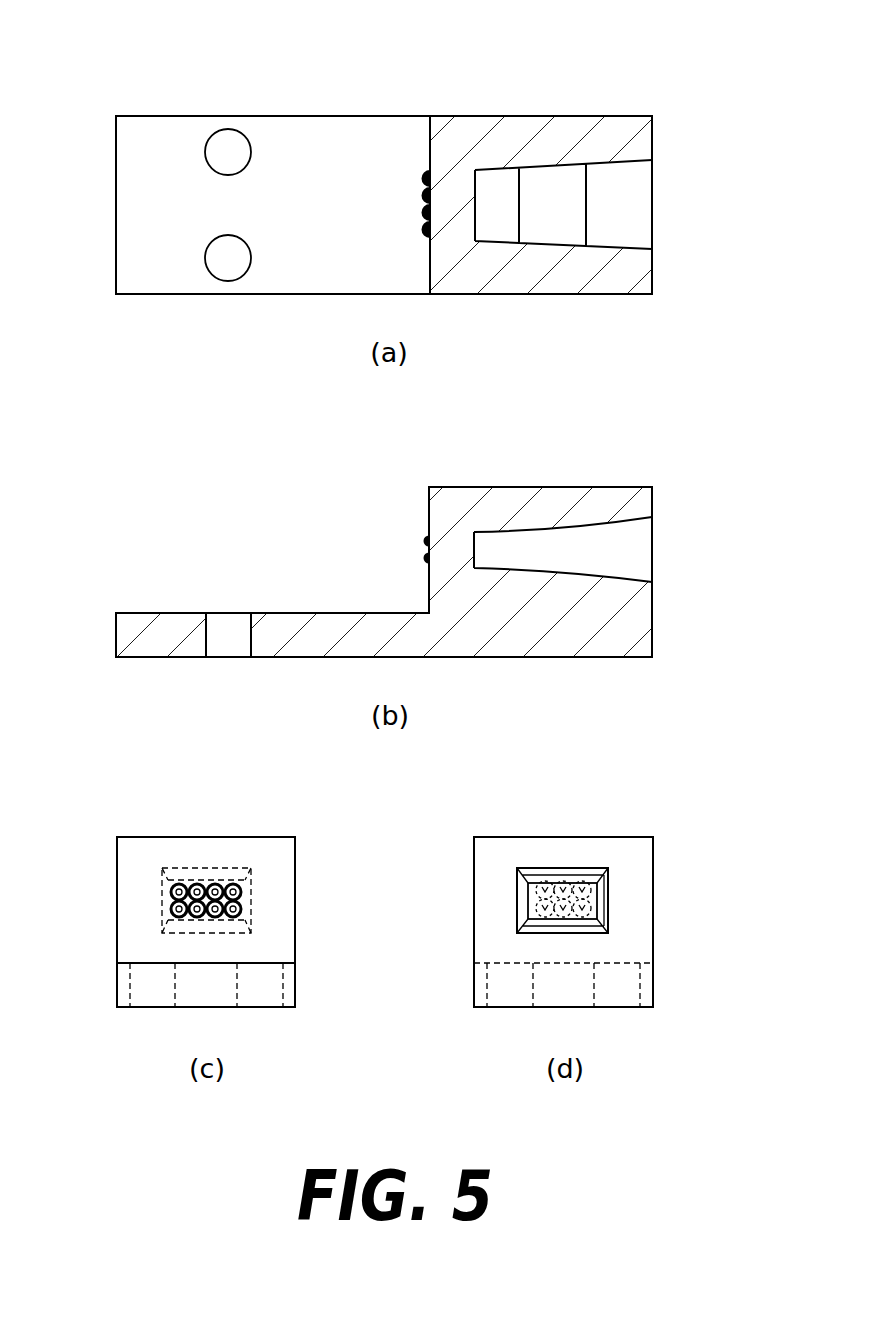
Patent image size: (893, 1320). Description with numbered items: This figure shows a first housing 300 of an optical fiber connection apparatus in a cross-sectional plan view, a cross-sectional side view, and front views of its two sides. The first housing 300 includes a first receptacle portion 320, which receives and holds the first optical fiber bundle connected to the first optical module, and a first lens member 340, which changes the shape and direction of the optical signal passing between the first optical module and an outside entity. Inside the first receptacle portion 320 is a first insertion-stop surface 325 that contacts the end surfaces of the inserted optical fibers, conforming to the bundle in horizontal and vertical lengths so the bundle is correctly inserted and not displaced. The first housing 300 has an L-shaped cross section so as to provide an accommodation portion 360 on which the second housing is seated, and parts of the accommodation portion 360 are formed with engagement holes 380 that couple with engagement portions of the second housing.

The first housing 300 is at (552, 74).
The first receptacle portion 320 is at (648, 200).
The first insertion-stop surface 325 is at (490, 537).
The first lens member 340 is at (428, 172).
The accommodation portion 360 is at (319, 125).
The engagement holes 380 is at (208, 247).